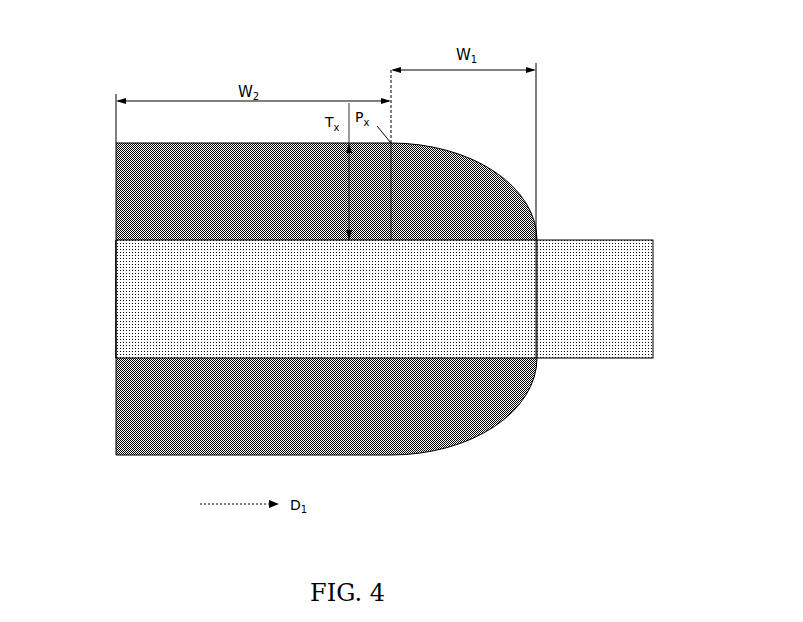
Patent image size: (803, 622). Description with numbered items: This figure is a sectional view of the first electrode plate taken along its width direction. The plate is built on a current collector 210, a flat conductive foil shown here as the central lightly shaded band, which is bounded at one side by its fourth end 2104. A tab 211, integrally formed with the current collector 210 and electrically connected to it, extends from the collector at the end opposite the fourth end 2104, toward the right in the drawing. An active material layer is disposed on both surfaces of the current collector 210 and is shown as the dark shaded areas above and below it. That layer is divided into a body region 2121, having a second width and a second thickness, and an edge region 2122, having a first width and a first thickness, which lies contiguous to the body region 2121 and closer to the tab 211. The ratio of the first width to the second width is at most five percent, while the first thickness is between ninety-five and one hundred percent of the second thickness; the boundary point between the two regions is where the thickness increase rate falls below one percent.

The current collector 210 is at (128, 345).
The fourth end 2104 is at (114, 313).
The tab 211 is at (590, 325).
The body region 2121 is at (231, 160).
The edge region 2122 is at (426, 158).